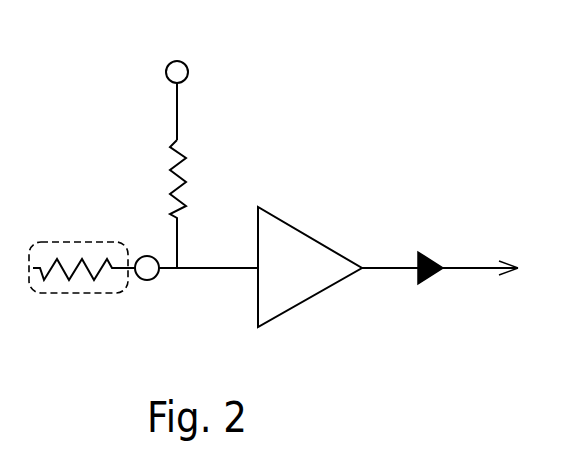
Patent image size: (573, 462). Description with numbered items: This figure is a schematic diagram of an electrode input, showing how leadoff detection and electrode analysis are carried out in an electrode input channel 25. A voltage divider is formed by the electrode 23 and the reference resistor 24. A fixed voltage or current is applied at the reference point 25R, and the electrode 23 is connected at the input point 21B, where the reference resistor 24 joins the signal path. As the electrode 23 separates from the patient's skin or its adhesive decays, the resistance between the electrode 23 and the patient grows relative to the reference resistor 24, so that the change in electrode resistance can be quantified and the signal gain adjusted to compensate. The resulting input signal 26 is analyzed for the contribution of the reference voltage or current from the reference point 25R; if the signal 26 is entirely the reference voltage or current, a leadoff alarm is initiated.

The electrode input channel 25 is at (397, 72).
The reference point 25R is at (166, 72).
The reference resistor 24 is at (170, 178).
The electrode 23 is at (60, 294).
The input point 21B is at (150, 274).
The input signal 26 is at (419, 252).